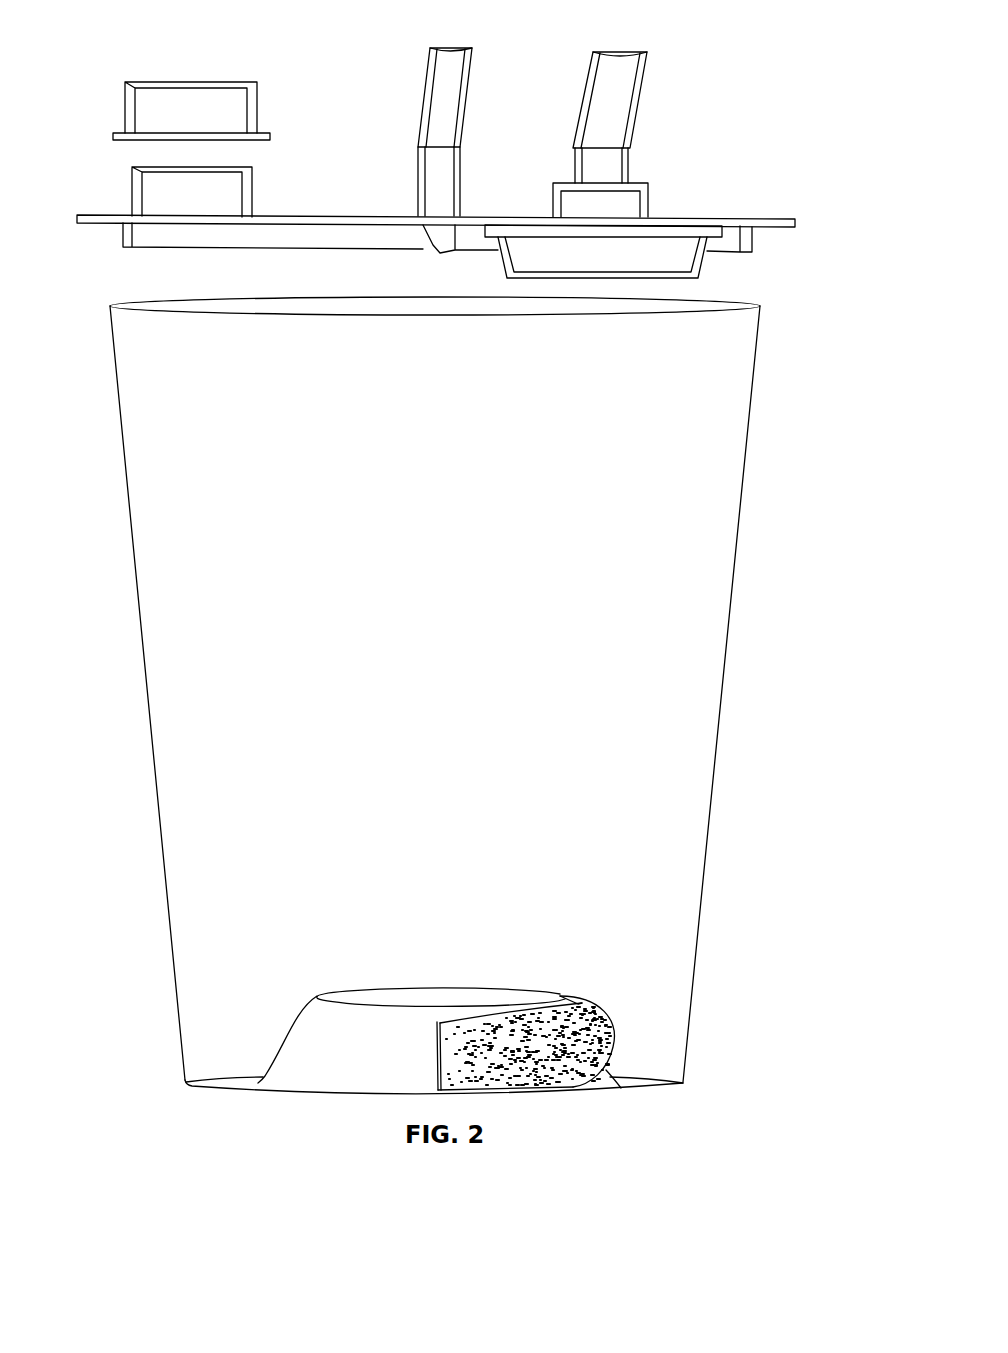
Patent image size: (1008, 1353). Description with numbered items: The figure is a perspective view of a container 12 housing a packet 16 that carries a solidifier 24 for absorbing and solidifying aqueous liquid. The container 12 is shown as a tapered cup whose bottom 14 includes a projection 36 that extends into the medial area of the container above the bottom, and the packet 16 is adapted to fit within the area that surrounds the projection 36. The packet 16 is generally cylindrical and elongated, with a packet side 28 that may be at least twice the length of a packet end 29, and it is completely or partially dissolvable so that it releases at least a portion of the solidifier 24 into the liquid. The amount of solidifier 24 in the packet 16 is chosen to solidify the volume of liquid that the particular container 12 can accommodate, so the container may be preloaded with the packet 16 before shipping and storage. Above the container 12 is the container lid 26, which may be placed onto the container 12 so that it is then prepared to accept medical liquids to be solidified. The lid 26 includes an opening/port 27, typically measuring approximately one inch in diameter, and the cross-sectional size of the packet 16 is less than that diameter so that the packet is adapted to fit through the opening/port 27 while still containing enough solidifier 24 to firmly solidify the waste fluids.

The container 12 is at (734, 566).
The bottom 14 is at (230, 1087).
The packet 16 is at (613, 1045).
The solidifier 24 is at (572, 1084).
The container lid 26 is at (768, 217).
The opening/port 27 is at (157, 183).
The packet side 28 is at (437, 1056).
The packet end 29 is at (499, 1090).
The projection 36 is at (317, 1035).